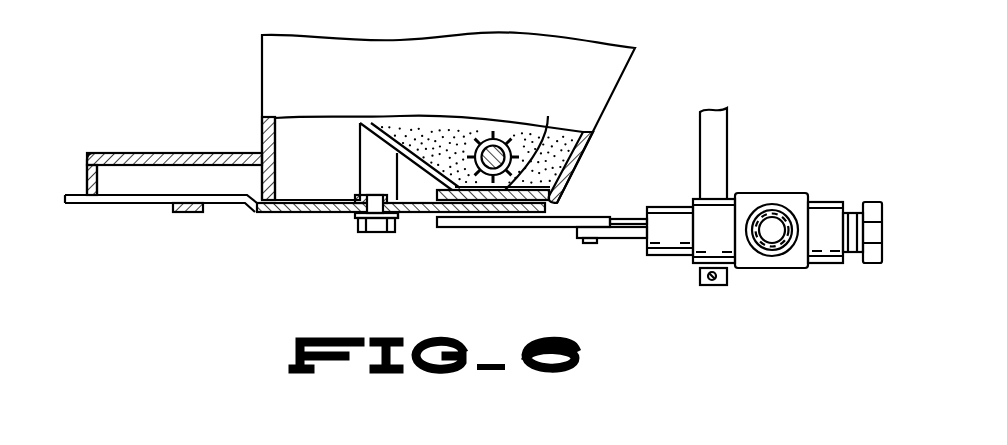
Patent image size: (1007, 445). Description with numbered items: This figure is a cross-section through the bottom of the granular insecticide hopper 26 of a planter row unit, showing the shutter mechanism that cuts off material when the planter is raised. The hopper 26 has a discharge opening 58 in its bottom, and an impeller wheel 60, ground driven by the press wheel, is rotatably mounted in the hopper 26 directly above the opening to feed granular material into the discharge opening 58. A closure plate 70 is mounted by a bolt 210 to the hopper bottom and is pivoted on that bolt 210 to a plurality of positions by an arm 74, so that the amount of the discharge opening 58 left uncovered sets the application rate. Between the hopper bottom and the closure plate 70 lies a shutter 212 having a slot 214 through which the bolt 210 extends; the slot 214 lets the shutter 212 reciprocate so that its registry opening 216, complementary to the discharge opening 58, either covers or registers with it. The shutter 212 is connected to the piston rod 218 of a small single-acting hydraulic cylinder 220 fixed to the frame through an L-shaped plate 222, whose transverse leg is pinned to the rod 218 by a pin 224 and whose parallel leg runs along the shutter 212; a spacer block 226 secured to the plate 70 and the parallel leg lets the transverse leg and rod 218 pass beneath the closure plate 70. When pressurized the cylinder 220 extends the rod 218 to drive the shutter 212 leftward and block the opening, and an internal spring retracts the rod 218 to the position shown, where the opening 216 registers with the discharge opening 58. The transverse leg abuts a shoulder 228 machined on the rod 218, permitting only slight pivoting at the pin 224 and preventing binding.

The granular insecticide hopper 26 is at (262, 62).
The discharge opening 58 is at (534, 139).
The impeller wheel 60 is at (478, 137).
The closure plate 70 is at (405, 232).
The arm 74 is at (83, 205).
The bolt 210 is at (353, 226).
The shutter 212 is at (355, 194).
The slot 214 is at (415, 213).
The registry opening 216 is at (487, 217).
The piston rod 218 is at (623, 238).
The hydraulic cylinder 220 is at (673, 256).
The L-shaped plate 222 is at (542, 228).
The pin 224 is at (588, 244).
The spacer block 226 is at (545, 217).
The shoulder 228 is at (597, 218).